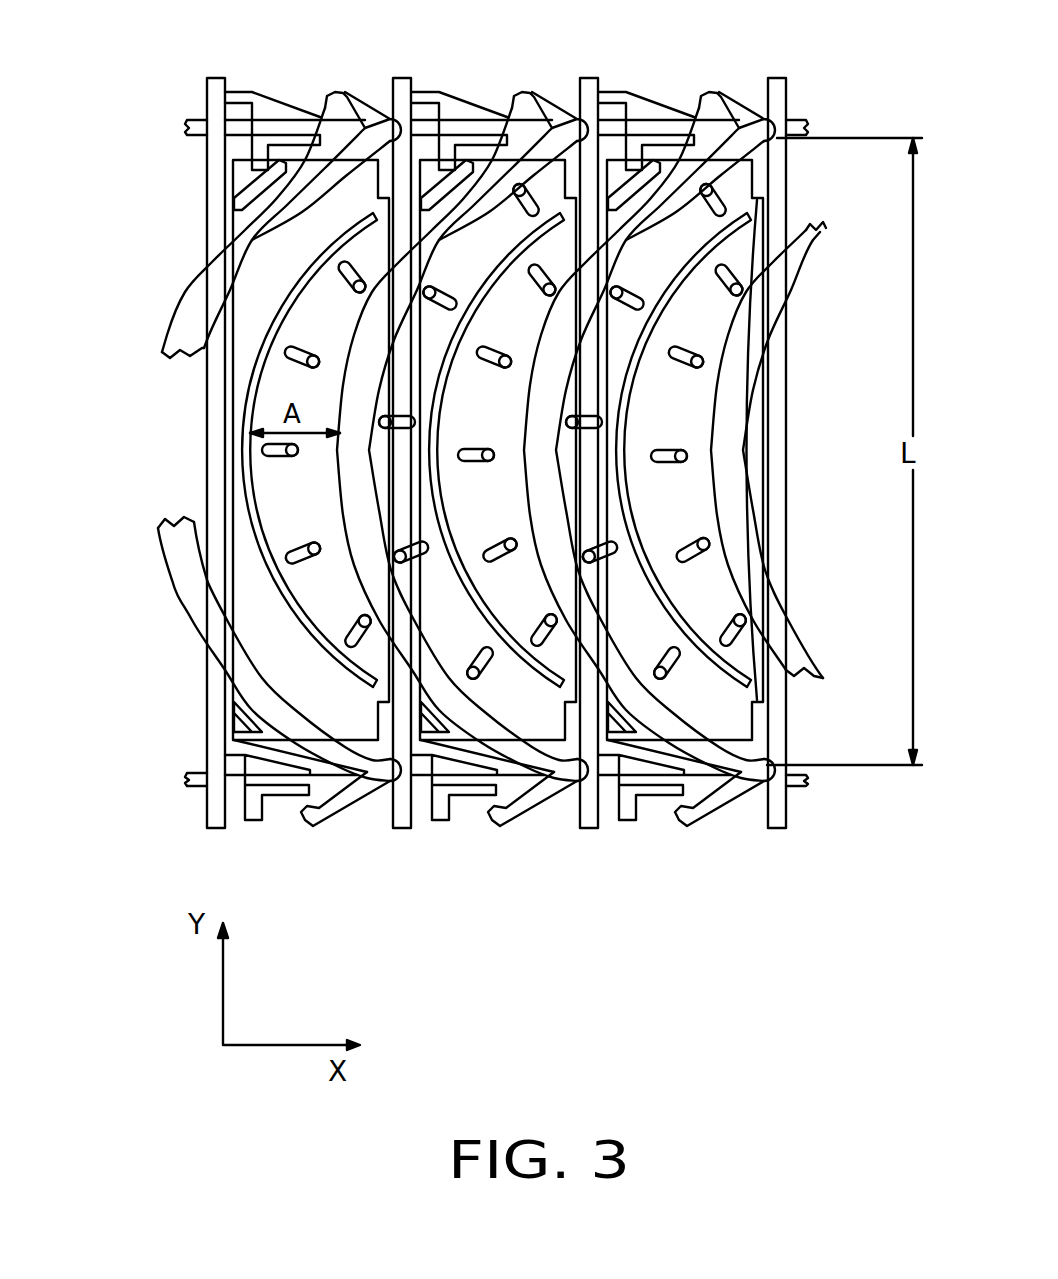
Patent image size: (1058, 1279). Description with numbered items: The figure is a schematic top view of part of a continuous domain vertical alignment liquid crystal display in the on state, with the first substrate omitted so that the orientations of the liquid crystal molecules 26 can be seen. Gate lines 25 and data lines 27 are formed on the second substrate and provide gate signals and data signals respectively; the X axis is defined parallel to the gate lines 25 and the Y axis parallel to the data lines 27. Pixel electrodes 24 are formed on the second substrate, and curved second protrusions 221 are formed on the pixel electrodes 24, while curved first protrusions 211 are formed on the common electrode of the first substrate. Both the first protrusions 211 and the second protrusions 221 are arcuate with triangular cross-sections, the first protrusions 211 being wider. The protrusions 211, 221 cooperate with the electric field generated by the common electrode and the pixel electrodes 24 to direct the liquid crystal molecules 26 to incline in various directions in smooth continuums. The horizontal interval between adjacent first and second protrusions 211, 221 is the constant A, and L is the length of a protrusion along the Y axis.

The pixel electrode 24 is at (750, 443).
The gate line 25 is at (808, 127).
The liquid crystal molecule 26 is at (290, 360).
The data line 27 is at (218, 100).
The first protrusion 211 is at (352, 102).
The second protrusion 221 is at (280, 310).